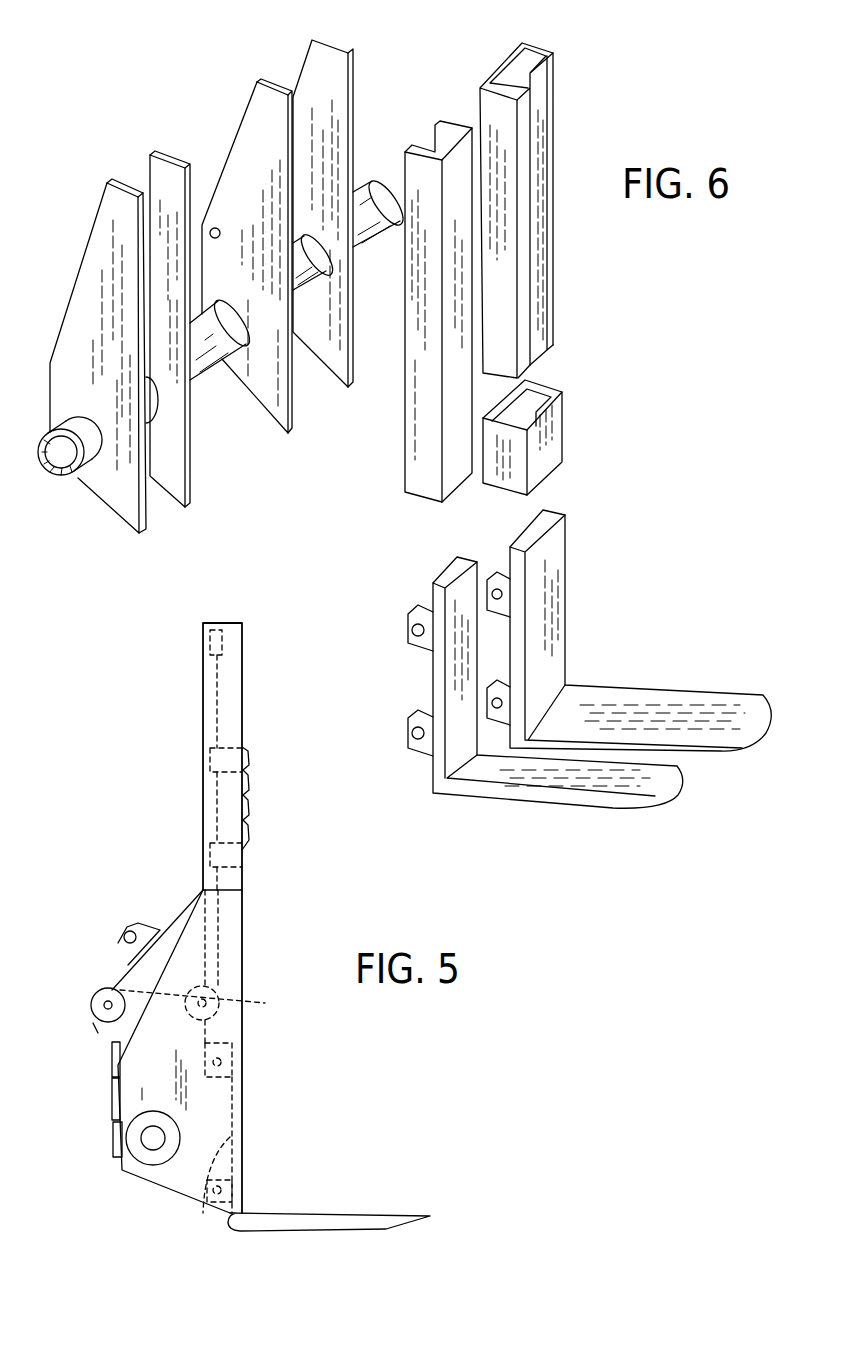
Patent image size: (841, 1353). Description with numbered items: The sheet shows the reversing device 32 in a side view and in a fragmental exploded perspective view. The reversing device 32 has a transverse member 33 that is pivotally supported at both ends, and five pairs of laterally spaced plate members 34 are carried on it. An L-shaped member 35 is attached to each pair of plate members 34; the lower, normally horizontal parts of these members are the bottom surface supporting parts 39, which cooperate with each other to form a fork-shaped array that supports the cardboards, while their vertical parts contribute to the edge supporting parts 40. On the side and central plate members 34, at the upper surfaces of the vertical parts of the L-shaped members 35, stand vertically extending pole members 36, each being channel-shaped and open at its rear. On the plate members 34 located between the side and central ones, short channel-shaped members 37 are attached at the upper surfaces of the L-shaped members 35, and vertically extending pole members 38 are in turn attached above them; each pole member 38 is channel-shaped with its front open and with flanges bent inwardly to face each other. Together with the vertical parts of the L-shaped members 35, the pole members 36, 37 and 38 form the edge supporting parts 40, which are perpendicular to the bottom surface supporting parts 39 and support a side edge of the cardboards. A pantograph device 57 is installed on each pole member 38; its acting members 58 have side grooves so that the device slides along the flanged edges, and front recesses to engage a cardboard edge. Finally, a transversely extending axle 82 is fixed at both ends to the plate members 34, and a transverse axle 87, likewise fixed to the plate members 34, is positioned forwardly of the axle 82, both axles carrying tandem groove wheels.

In FIG. 6, the reversing device 32 is at (183, 28).
In FIG. 5, the reversing device 32 is at (247, 654).
In FIG. 6, the transverse member 33 is at (382, 230).
In FIG. 5, the transverse member 33 is at (141, 1172).
In FIG. 6, the plate member 34 is at (130, 186).
In FIG. 5, the plate member 34 is at (176, 924).
In FIG. 6, the L-shaped member 35 is at (477, 641).
In FIG. 5, the L-shaped member 35 is at (207, 1204).
In FIG. 6, the pole member 36 is at (468, 396).
In FIG. 6, the short channel-shaped member 37 is at (563, 433).
In FIG. 6, the pole member 38 is at (562, 241).
In FIG. 5, the bottom surface supporting part 39 is at (310, 1212).
In FIG. 5, the edge supporting part 40 is at (242, 700).
In FIG. 5, the pantograph device 57 is at (247, 748).
In FIG. 5, the acting member 58 is at (246, 767).
In FIG. 5, the transverse axle 82 is at (106, 988).
In FIG. 5, the transverse axle 87 is at (212, 1003).